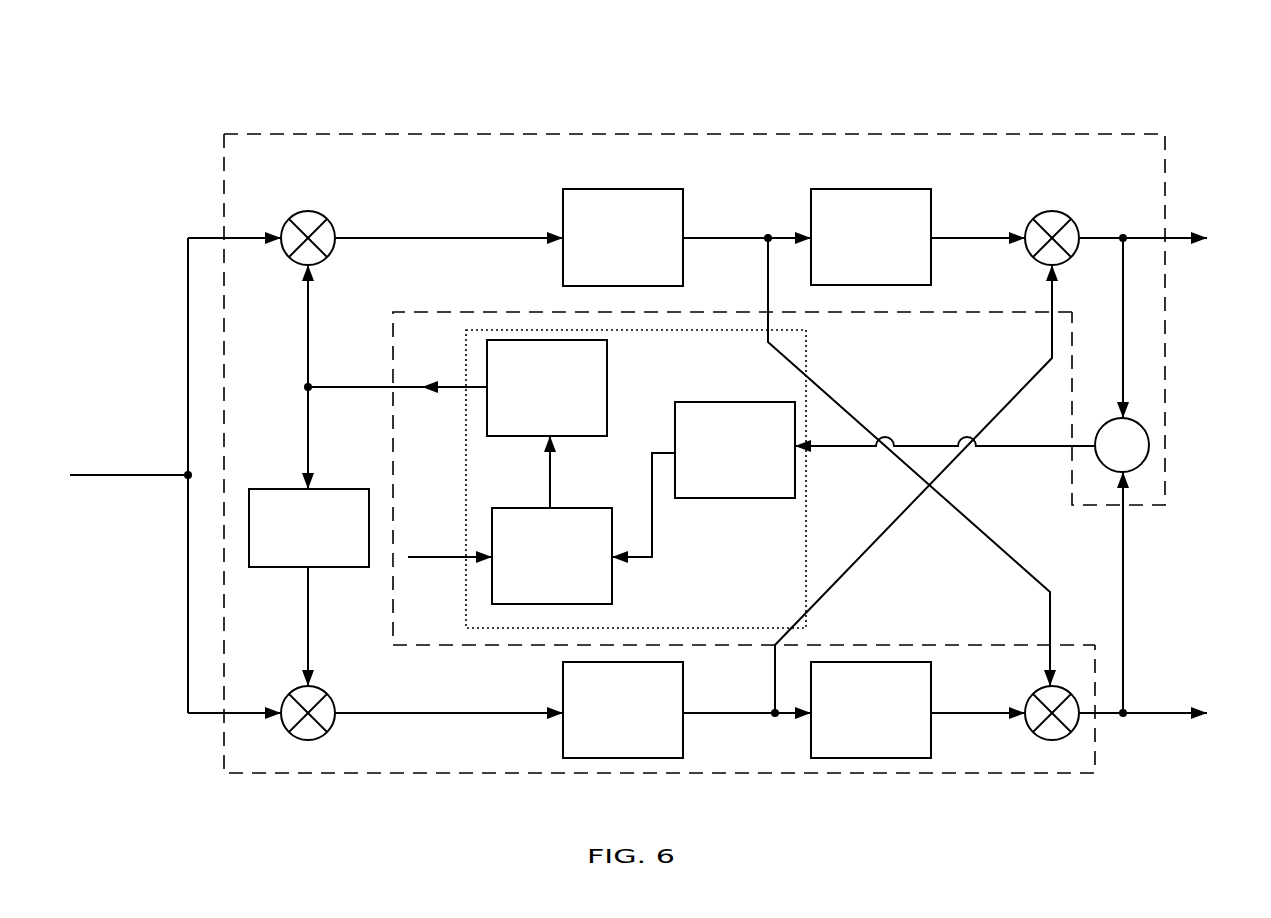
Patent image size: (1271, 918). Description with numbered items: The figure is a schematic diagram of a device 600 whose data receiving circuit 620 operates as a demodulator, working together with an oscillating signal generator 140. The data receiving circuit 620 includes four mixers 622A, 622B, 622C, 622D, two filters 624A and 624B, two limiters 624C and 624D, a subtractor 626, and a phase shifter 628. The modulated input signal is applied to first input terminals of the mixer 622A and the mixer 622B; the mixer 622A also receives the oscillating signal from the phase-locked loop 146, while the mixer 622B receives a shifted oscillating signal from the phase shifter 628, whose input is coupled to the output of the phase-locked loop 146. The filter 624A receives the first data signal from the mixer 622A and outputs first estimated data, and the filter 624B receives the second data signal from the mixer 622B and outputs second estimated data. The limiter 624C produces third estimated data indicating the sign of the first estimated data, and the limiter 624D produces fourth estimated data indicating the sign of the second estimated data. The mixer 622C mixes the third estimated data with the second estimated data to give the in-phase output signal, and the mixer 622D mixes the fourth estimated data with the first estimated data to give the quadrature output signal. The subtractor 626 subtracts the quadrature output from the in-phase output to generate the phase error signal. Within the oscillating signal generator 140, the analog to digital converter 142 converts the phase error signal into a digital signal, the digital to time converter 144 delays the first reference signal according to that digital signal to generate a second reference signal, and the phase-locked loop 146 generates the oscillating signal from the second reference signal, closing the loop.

The device 600 is at (650, 443).
The data receiving circuit 620 is at (224, 172).
The mixer 622A is at (333, 225).
The mixer 622B is at (333, 700).
The mixer 622C is at (1053, 212).
The mixer 622D is at (1057, 738).
The filter 624A is at (623, 237).
The filter 624B is at (623, 710).
The limiter 624C is at (871, 237).
The limiter 624D is at (871, 710).
The subtractor 626 is at (1148, 436).
The phase shifter 628 is at (309, 528).
The oscillating signal generator 140 is at (807, 345).
The analog to digital converter 142 is at (735, 450).
The digital to time converter 144 is at (552, 556).
The phase-locked loop 146 is at (547, 388).